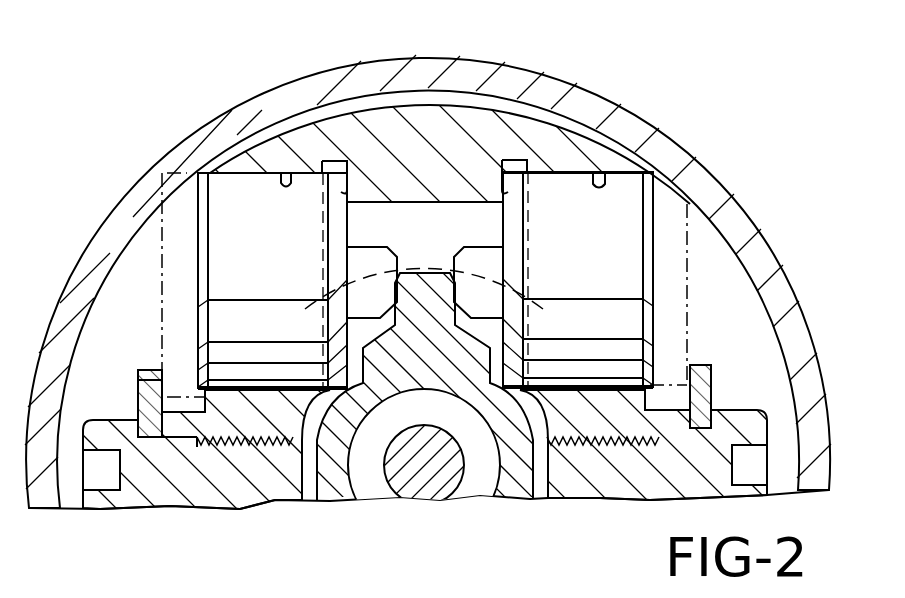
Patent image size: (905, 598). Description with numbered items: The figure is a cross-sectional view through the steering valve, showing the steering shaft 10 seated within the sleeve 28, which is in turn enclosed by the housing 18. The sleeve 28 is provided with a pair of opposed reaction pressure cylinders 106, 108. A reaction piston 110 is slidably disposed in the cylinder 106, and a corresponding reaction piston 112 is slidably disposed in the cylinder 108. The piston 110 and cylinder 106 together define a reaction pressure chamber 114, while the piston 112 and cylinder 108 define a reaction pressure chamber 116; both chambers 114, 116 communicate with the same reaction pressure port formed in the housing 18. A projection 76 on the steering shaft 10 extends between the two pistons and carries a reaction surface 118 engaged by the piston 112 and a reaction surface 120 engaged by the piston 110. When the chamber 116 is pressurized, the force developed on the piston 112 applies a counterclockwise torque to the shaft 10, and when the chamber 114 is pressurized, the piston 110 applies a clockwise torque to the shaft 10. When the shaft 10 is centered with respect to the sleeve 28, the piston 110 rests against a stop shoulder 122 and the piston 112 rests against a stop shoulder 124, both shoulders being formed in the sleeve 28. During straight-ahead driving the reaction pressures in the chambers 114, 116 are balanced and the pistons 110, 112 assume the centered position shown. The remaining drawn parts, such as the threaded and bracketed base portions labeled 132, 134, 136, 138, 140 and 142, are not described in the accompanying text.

The steering shaft 10 is at (520, 478).
The housing 18 is at (153, 188).
The sleeve 28 is at (410, 104).
The projection 76 is at (443, 355).
The reaction pressure cylinder 106 is at (352, 165).
The reaction pressure cylinder 108 is at (600, 183).
The reaction piston 110 is at (281, 253).
The reaction piston 112 is at (601, 253).
The reaction pressure chamber 114 is at (173, 263).
The reaction pressure chamber 116 is at (677, 217).
The reaction surface 118 is at (457, 287).
The reaction surface 120 is at (412, 298).
The stop shoulder 122 is at (344, 178).
The stop shoulder 124 is at (510, 165).
The threaded bore 132 is at (243, 480).
The base plate 134 is at (190, 473).
The bracket 136 is at (140, 380).
The base plate 138 is at (607, 443).
The side wall 140 is at (723, 430).
The bracket 142 is at (743, 327).